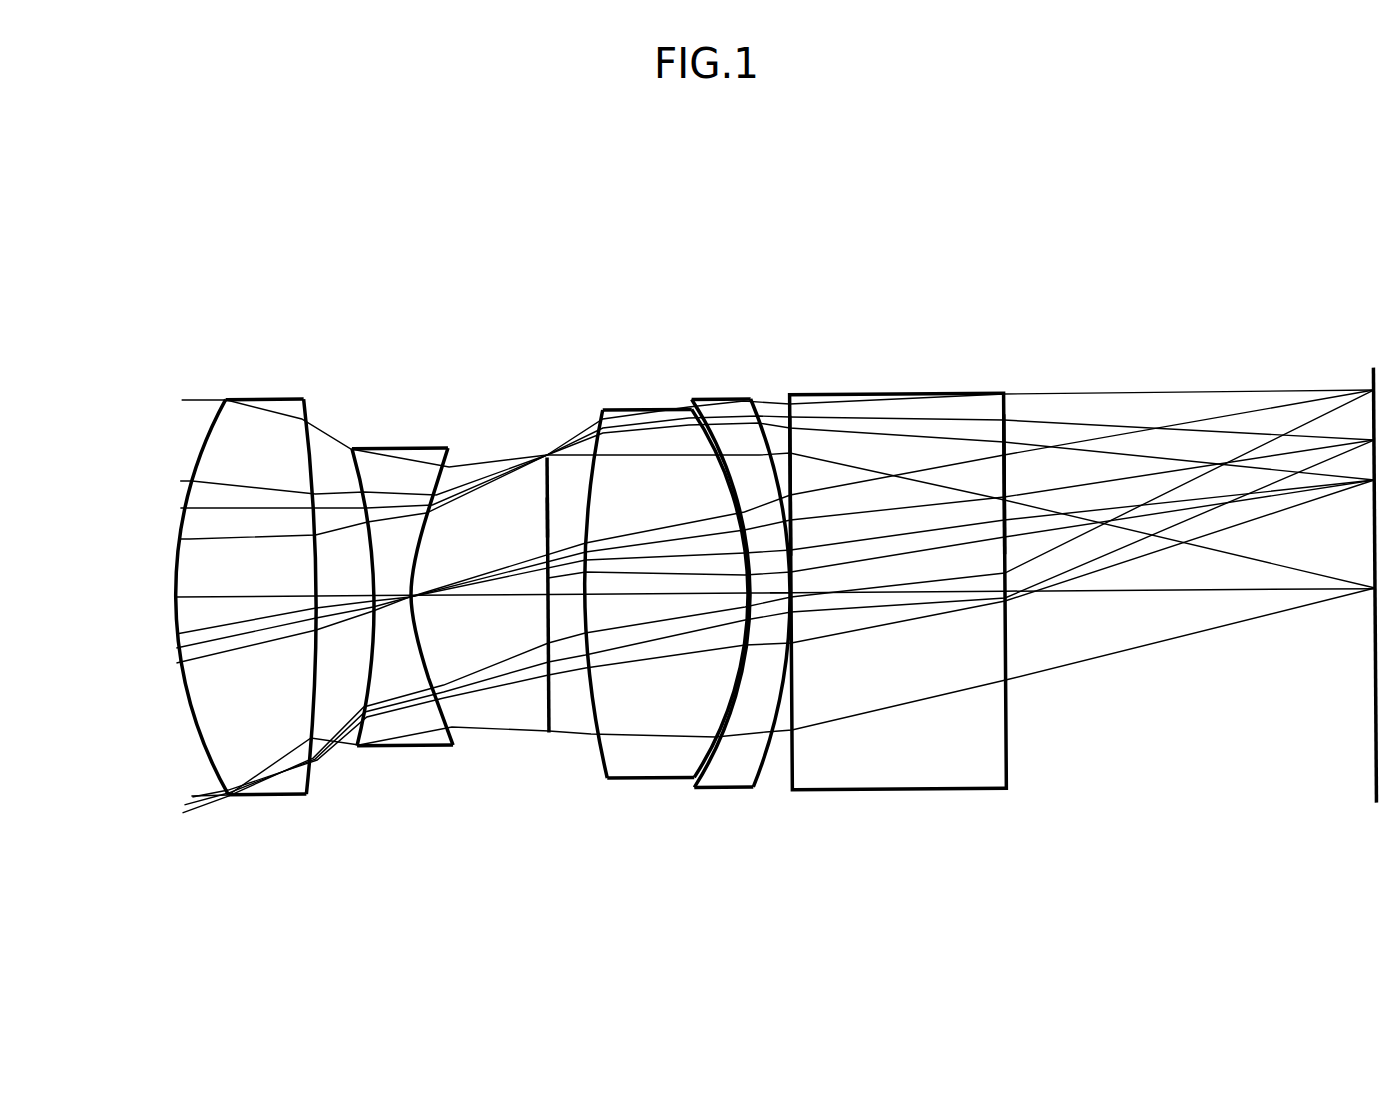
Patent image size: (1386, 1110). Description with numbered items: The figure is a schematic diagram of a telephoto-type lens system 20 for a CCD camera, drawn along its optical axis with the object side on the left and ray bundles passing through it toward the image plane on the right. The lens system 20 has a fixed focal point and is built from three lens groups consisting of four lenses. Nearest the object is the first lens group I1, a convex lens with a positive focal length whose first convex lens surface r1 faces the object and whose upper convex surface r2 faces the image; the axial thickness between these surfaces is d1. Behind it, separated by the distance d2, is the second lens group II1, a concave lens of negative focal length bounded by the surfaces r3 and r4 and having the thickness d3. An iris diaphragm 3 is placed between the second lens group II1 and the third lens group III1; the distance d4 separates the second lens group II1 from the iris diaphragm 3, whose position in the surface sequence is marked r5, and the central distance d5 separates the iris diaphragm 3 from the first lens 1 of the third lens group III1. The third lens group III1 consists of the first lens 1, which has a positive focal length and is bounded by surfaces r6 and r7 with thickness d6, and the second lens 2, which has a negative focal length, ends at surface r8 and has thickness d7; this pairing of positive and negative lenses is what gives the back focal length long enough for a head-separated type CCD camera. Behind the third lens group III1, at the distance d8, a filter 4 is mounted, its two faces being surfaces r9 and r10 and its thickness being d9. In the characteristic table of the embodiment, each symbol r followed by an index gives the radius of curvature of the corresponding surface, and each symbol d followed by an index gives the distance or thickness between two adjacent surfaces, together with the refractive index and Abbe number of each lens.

The telephoto-type lens system 20 is at (360, 197).
The first lens group I1 is at (342, 303).
The second lens group II1 is at (443, 303).
The third lens group III1 is at (720, 254).
The first lens 1 is at (668, 299).
The second lens 2 is at (748, 299).
The iris diaphragm 3 is at (527, 712).
The filter 4 is at (869, 777).
The first convex lens surface r1 is at (196, 545).
The upper convex surface r2 is at (319, 544).
The lens surface r3 is at (372, 519).
The lens surface r4 is at (431, 519).
The lens surface r5 is at (527, 414).
The lens surface r6 is at (582, 535).
The lens surface r7 is at (702, 534).
The lens surface r8 is at (753, 539).
The lens surface r9 is at (812, 422).
The lens surface r10 is at (1022, 421).
The thickness d1 is at (248, 597).
The distance d2 is at (347, 597).
The thickness d3 is at (395, 597).
The distance d4 is at (492, 597).
The central distance d5 is at (570, 597).
The thickness d6 is at (667, 597).
The thickness d7 is at (763, 742).
The distance d8 is at (812, 597).
The thickness d9 is at (928, 597).